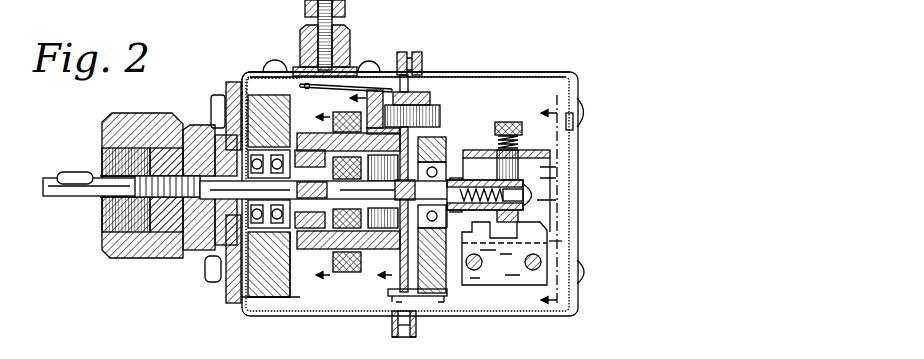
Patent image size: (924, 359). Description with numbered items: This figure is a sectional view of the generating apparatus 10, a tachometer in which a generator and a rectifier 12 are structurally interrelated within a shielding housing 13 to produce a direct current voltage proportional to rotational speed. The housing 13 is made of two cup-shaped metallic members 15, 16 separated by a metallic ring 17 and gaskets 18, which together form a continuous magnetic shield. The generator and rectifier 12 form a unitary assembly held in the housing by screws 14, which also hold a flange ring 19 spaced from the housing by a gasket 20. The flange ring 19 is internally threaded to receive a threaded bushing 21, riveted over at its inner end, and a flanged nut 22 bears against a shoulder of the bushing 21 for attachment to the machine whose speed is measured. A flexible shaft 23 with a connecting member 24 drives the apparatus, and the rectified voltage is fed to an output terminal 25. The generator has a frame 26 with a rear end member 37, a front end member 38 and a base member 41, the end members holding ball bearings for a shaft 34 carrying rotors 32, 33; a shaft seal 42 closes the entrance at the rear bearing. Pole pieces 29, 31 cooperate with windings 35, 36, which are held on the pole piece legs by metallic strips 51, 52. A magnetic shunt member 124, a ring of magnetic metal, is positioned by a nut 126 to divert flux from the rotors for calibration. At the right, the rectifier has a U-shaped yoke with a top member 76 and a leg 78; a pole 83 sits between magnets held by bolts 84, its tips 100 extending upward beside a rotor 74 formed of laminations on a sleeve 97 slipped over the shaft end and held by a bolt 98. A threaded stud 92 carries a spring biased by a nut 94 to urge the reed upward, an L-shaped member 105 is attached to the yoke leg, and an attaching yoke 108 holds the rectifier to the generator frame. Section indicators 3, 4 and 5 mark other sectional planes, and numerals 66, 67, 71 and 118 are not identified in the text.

The section line 3- 3 is at (541, 203).
The section line 4- 4 is at (316, 196).
The section line 5- 5 is at (365, 187).
The generating apparatus 10 is at (624, 101).
The rectifier 12 is at (503, 292).
The shielding housing 13 is at (575, 75).
The screws 14 is at (215, 97).
The cup-shaped metallic member 15 is at (388, 63).
The cup-shaped metallic member 16 is at (545, 73).
The metallic ring 17 is at (410, 337).
The gaskets 18 is at (423, 73).
The flange ring 19 is at (197, 257).
The gasket 20 is at (233, 302).
The threaded bushing 21 is at (157, 260).
The flanged nut 22 is at (133, 114).
The flexible shaft 23 is at (140, 203).
The connecting member 24 is at (55, 197).
The output terminal 25 is at (312, 3).
The frame 26 is at (267, 300).
The pole piece 29 is at (299, 122).
The pole piece 31 is at (350, 272).
The rotor 32 is at (269, 161).
The rotor 33 is at (382, 272).
The shaft 34 is at (269, 264).
The winding 35 is at (346, 95).
The winding 36 is at (338, 302).
The rear end member 37 is at (250, 72).
The front end member 38 is at (447, 137).
The base member 41 is at (382, 296).
The shaft seal 42 is at (217, 277).
The metallic strip 51 is at (288, 62).
The metallic strip 52 is at (269, 264).
The stem element 66 is at (406, 5).
The stem element 67 is at (362, 6).
The stem element 71 is at (428, 0).
The rotor 74 is at (549, 172).
The top member 76 is at (535, 150).
The leg 78 is at (551, 178).
The pole 83 is at (549, 241).
The bolts 84 is at (573, 262).
The threaded stud 92 is at (507, 121).
The nut 94 is at (500, 122).
The sleeve 97 is at (453, 178).
The bolt 98 is at (540, 190).
The tips 100 is at (545, 210).
The L-shaped member 105 is at (399, 338).
The attaching yoke 108 is at (457, 228).
The stem element 118 is at (466, 3).
The magnetic shunt member 124 is at (425, 125).
The nut 126 is at (420, 93).